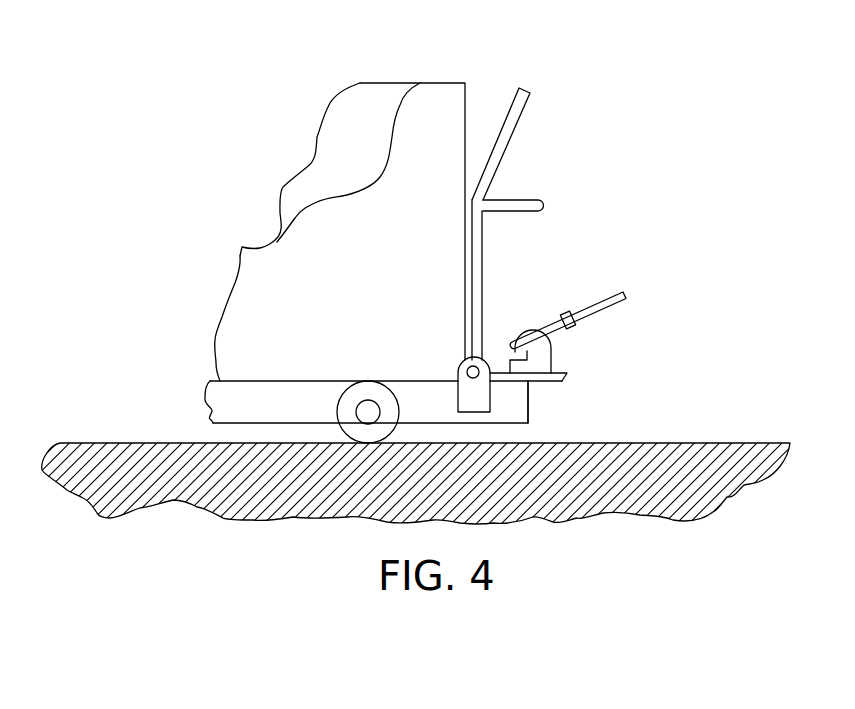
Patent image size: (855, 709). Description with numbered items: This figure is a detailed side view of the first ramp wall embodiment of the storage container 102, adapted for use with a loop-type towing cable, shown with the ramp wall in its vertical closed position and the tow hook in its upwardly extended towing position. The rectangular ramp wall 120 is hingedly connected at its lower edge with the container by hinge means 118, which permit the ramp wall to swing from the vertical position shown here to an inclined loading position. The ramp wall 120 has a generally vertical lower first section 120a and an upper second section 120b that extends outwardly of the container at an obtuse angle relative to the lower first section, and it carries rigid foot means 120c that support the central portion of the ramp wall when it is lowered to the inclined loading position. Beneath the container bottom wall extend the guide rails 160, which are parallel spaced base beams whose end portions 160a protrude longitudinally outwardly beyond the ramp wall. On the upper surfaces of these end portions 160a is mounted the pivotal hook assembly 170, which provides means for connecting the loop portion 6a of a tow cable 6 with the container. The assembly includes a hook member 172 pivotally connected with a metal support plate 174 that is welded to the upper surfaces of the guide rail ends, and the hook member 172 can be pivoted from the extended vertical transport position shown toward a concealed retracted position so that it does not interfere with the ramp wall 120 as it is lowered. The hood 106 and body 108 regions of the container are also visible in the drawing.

The storage container 102 is at (468, 78).
The hood 106 is at (362, 93).
The body 108 is at (377, 263).
The hinge means 118 is at (460, 370).
The ramp wall 120 is at (556, 217).
The lower first section 120a is at (477, 242).
The upper second section 120b is at (512, 138).
The rigid foot means 120c is at (545, 204).
The guide rails 160 is at (416, 469).
The guide rail end portions 160a is at (513, 407).
The pivotal hook assembly 170 is at (585, 355).
The hook member 172 is at (543, 358).
The support plate 174 is at (570, 373).
The tow cable 6 is at (568, 300).
The loop portion 6a is at (548, 327).